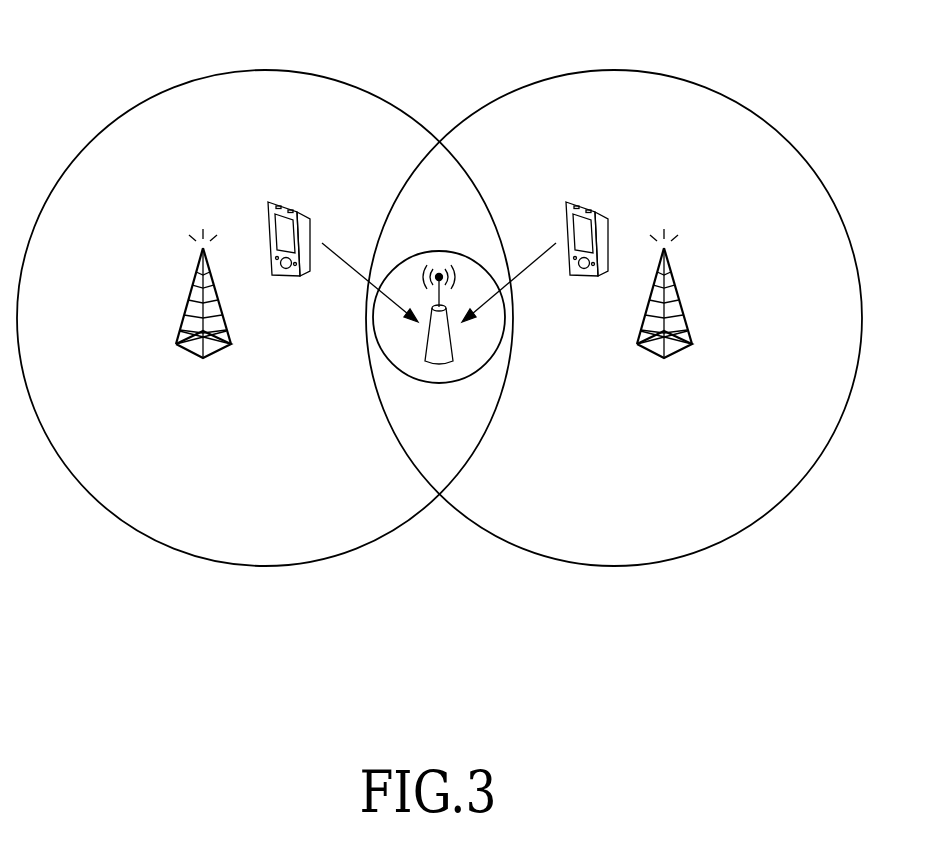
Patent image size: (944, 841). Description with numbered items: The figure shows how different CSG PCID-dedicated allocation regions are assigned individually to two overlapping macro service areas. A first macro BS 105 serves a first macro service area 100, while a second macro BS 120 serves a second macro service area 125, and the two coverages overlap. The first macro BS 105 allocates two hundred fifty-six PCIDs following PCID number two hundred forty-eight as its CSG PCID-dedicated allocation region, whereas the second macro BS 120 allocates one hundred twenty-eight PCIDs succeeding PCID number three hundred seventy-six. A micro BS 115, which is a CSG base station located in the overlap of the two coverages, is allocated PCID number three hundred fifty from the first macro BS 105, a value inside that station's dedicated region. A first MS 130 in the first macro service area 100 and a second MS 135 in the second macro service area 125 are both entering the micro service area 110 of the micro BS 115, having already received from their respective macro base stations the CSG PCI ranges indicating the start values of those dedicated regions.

The macro service area #1 100 is at (263, 67).
The macro service area #2 125 is at (610, 67).
The micro service area 110 is at (439, 249).
The micro BS 115 is at (439, 366).
The macro BS #1 105 is at (189, 298).
The macro BS #2 120 is at (678, 293).
The MS #1 130 is at (297, 278).
The MS #2 135 is at (598, 278).